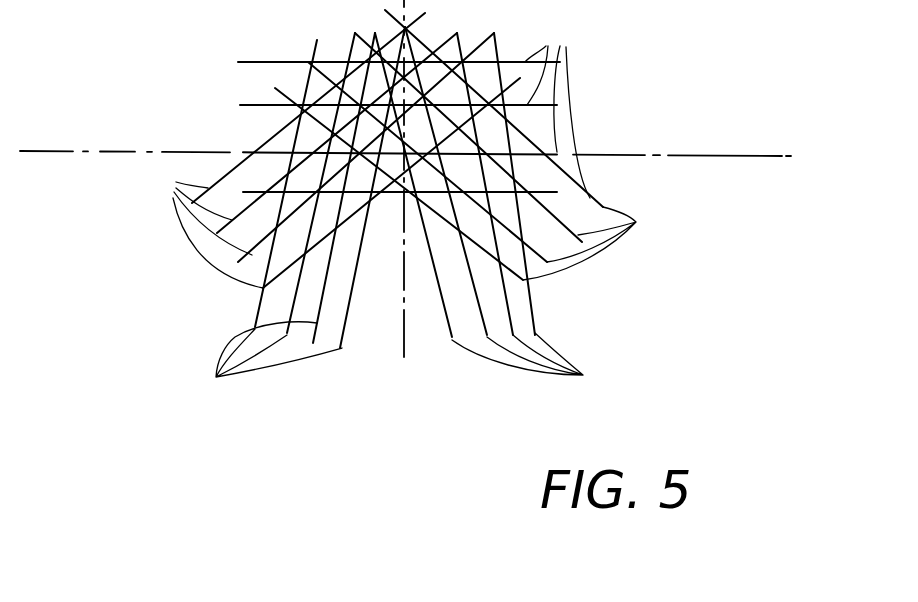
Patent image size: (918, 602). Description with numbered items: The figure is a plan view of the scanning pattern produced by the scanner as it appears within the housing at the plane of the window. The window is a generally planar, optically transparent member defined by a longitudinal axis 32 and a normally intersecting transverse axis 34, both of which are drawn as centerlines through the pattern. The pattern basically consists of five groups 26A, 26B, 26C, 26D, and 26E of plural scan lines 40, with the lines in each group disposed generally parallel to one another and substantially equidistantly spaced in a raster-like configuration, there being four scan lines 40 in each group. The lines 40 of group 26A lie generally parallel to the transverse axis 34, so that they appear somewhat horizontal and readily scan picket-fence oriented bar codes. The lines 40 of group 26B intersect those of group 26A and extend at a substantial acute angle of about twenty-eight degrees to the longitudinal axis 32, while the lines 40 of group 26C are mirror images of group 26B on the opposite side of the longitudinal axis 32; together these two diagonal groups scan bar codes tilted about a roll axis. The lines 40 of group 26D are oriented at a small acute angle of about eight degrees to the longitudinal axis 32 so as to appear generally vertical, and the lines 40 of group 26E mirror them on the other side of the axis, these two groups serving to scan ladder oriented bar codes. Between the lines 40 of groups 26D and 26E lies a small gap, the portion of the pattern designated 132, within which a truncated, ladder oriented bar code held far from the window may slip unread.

The first group of scan lines 26A is at (605, 73).
The second group of scan lines 26B is at (650, 252).
The third group of scan lines 26C is at (218, 332).
The fourth group of scan lines 26D is at (550, 388).
The fifth group of scan lines 26E is at (332, 407).
The scan lines 40 is at (404, 204).
The longitudinal axis 32 is at (403, 357).
The transverse axis 34 is at (782, 129).
The gap portion of the pattern 132 is at (392, 325).